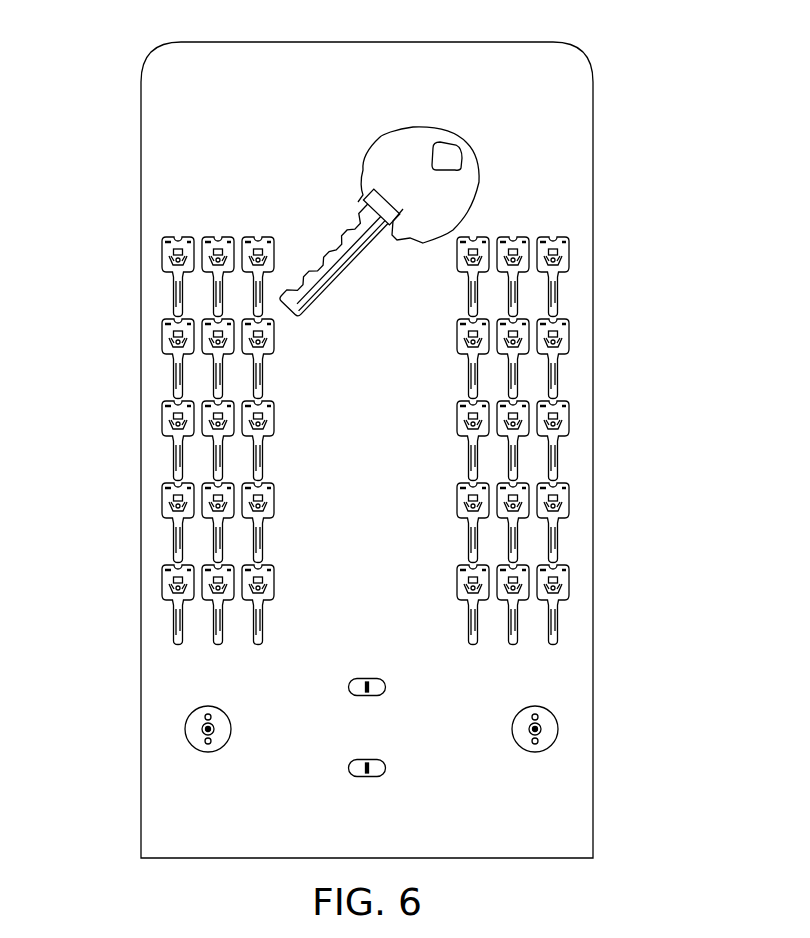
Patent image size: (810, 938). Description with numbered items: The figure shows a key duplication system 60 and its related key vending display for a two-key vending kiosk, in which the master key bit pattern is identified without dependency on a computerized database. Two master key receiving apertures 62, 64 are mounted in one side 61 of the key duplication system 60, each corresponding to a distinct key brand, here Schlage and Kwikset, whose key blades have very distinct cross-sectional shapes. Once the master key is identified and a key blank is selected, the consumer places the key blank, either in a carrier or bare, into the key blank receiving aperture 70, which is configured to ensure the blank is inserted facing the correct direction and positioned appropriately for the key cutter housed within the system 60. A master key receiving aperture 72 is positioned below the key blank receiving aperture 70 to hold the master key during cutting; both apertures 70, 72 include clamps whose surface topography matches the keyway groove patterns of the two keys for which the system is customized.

The key duplication system 60 is at (596, 44).
The side 61 is at (195, 827).
The master key receiving aperture 62 is at (538, 724).
The master key receiving aperture 64 is at (207, 724).
The key blank receiving aperture 70 is at (367, 687).
The master key receiving aperture 72 is at (373, 768).